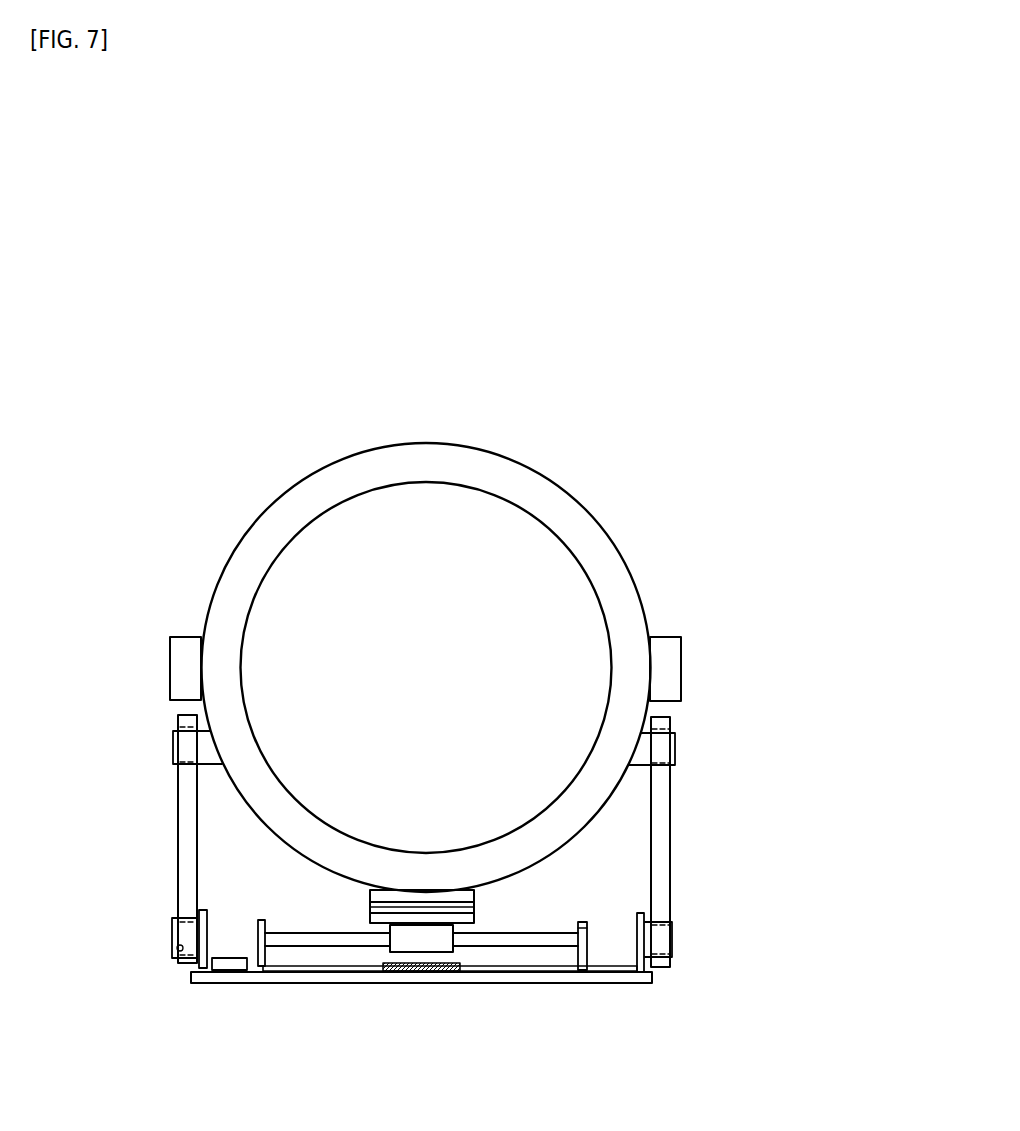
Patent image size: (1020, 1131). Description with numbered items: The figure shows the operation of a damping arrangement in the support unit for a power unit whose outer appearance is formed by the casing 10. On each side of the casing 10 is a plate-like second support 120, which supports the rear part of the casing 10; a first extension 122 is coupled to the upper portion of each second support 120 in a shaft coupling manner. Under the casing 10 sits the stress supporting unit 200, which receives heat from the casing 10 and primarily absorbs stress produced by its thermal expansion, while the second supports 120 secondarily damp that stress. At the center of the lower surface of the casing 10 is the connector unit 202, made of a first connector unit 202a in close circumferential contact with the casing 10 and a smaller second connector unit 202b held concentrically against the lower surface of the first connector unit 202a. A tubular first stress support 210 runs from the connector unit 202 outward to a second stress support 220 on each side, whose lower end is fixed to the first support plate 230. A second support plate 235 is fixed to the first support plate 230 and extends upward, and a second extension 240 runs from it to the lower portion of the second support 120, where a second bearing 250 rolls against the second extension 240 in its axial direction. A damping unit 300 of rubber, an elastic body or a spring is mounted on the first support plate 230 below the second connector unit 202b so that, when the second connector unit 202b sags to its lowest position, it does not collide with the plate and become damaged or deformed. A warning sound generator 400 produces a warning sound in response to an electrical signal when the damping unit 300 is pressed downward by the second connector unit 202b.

The casing 10 is at (425, 585).
The second support 120 is at (660, 803).
The first extension 122 is at (676, 743).
The stress supporting unit 200 is at (443, 582).
The connector unit 202 is at (591, 909).
The first connector unit 202a is at (474, 902).
The second connector unit 202b is at (440, 930).
The first stress support 210 is at (507, 940).
The second stress support 220 is at (258, 925).
The first support plate 230 is at (572, 975).
The second support plate 235 is at (198, 918).
The second extension 240 is at (172, 928).
The second bearing 250 is at (178, 950).
The damping unit 300 is at (418, 968).
The warning sound generator 400 is at (224, 963).